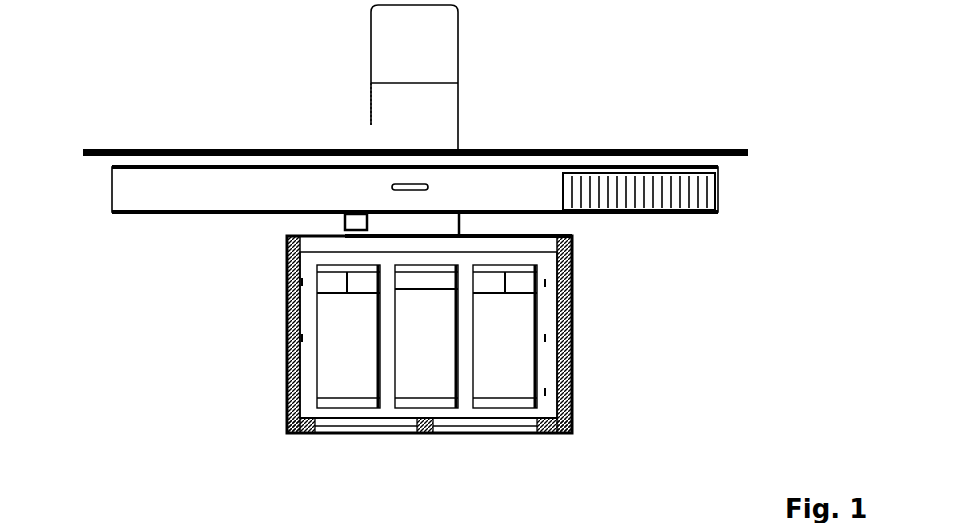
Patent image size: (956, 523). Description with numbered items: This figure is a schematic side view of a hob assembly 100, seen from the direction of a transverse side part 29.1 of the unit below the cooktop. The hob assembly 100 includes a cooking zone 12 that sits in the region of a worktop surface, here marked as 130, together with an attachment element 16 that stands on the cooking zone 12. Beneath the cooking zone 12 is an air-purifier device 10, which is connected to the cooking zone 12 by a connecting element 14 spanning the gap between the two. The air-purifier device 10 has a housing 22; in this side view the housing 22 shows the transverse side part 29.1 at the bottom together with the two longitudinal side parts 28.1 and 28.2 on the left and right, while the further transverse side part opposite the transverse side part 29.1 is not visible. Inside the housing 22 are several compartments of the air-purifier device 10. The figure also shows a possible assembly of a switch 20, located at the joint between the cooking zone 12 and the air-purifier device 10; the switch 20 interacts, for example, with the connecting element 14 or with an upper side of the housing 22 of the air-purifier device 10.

The hob assembly 100 is at (752, 62).
The countertop 130 is at (233, 148).
The attachment element 16 is at (478, 40).
The cooking zone 12 is at (744, 190).
The switch 20 is at (340, 223).
The connecting element 14 is at (543, 225).
The air-purifier device 10 is at (424, 366).
The housing 22 is at (333, 364).
The longitudinal side part 28.1 is at (287, 337).
The longitudinal side part 28.2 is at (568, 378).
The transverse side part 29.1 is at (390, 393).